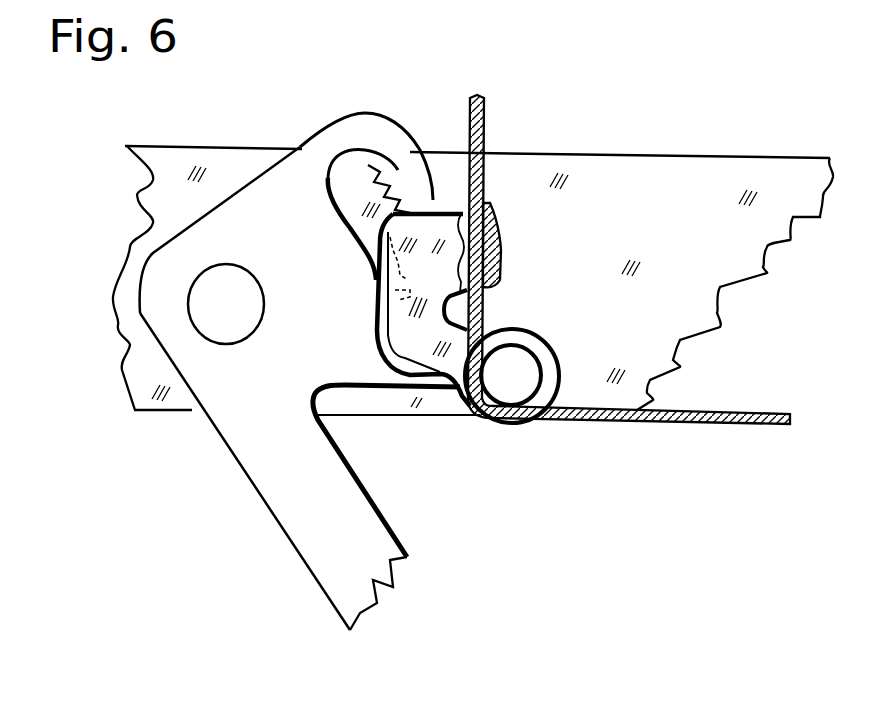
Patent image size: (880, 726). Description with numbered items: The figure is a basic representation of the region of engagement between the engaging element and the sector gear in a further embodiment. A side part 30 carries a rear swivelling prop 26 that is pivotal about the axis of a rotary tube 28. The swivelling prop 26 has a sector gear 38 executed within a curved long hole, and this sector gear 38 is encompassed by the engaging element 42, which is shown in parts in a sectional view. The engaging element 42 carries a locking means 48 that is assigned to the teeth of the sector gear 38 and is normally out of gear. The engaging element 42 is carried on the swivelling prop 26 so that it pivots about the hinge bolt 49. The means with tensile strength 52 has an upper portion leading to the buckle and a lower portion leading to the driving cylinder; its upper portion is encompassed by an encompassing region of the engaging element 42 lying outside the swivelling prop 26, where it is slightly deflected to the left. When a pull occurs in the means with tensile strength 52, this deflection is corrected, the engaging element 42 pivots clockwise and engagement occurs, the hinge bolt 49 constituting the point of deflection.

The rear swivelling prop 26 is at (260, 475).
The rotary tube 28 is at (200, 280).
The side part 30 is at (673, 187).
The sector gear 38 is at (333, 160).
The engaging element 42 is at (422, 338).
The locking means 48 is at (434, 180).
The hinge bolt 49 is at (513, 382).
The means with tensile strength 52 is at (483, 125).